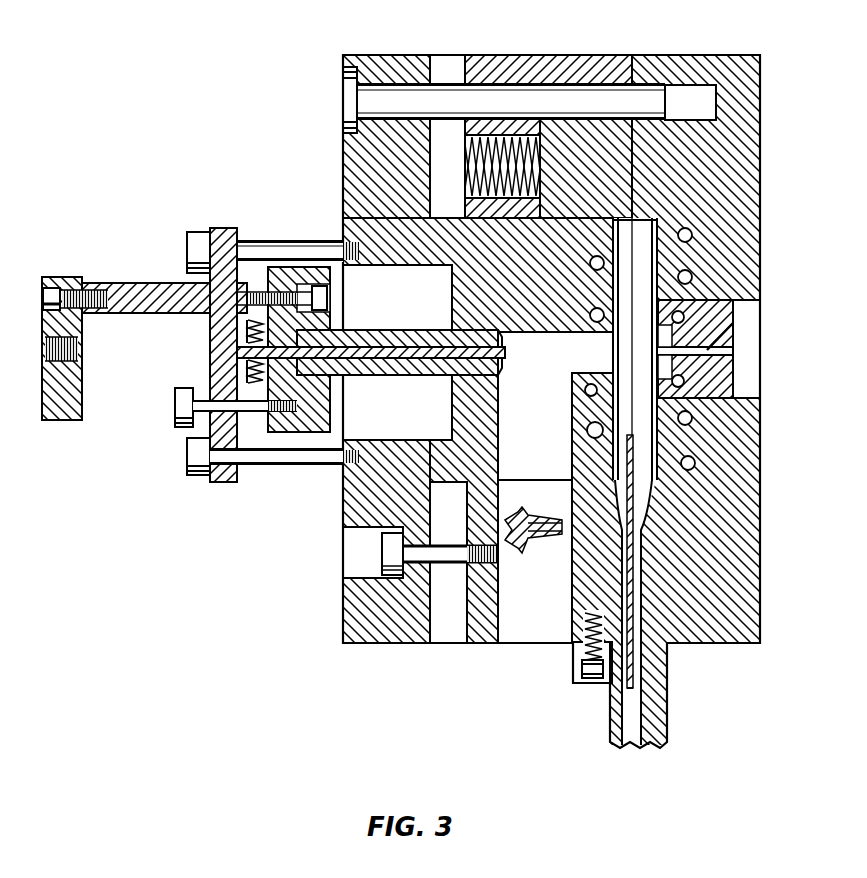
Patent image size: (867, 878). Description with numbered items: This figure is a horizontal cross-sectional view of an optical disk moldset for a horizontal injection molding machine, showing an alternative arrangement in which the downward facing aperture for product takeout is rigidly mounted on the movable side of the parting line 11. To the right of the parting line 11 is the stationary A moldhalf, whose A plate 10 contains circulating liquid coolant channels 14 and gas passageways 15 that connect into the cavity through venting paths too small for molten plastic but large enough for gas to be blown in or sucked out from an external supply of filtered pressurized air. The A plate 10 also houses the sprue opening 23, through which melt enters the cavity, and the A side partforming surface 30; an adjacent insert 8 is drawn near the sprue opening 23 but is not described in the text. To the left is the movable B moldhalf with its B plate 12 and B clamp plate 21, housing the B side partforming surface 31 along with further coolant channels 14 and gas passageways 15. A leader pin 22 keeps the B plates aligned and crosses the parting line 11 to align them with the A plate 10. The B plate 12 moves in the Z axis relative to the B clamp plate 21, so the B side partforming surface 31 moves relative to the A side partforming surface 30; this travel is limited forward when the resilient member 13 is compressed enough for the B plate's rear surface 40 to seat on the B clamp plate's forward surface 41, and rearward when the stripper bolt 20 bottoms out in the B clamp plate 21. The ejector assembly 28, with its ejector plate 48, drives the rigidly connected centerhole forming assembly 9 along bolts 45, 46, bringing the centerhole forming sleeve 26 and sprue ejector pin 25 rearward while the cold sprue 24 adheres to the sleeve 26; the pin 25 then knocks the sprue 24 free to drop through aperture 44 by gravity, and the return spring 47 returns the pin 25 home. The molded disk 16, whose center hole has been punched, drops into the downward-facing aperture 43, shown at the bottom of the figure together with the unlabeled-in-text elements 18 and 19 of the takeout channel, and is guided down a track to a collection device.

The valve seat insert 8 is at (722, 380).
The centerhole forming assembly 9 is at (279, 247).
The A plate 10 is at (700, 70).
The parting line 11 is at (600, 63).
The B plate 12 is at (545, 66).
The resilient member 13 is at (497, 62).
The circulating liquid coolant channels 14 is at (700, 238).
The gas passageways 15 is at (680, 315).
The disk 16 is at (633, 679).
The nozzle channel 18 is at (645, 708).
The nozzle body 19 is at (658, 656).
The stripper bolt 20 is at (393, 555).
The B clamp plate 21 is at (345, 628).
The leader pin 22 is at (372, 106).
The sprue opening 23 is at (707, 350).
The cold sprue 24 is at (540, 530).
The sprue ejector pin 25 is at (347, 356).
The centerhole forming sleeve 26 is at (388, 368).
The ejector assembly 28 is at (200, 332).
The A side partforming surface 30 is at (735, 434).
The B side partforming surface 31 is at (626, 456).
The B plate's rear surface 40 is at (464, 70).
The B clamp plate's forward surface 41 is at (433, 638).
The downward-facing aperture 43 is at (621, 728).
The aperture 44 is at (545, 622).
The bolt 45 is at (278, 455).
The bolt 46 is at (183, 407).
The return spring 47 is at (252, 376).
The ejector plate 48 is at (215, 345).